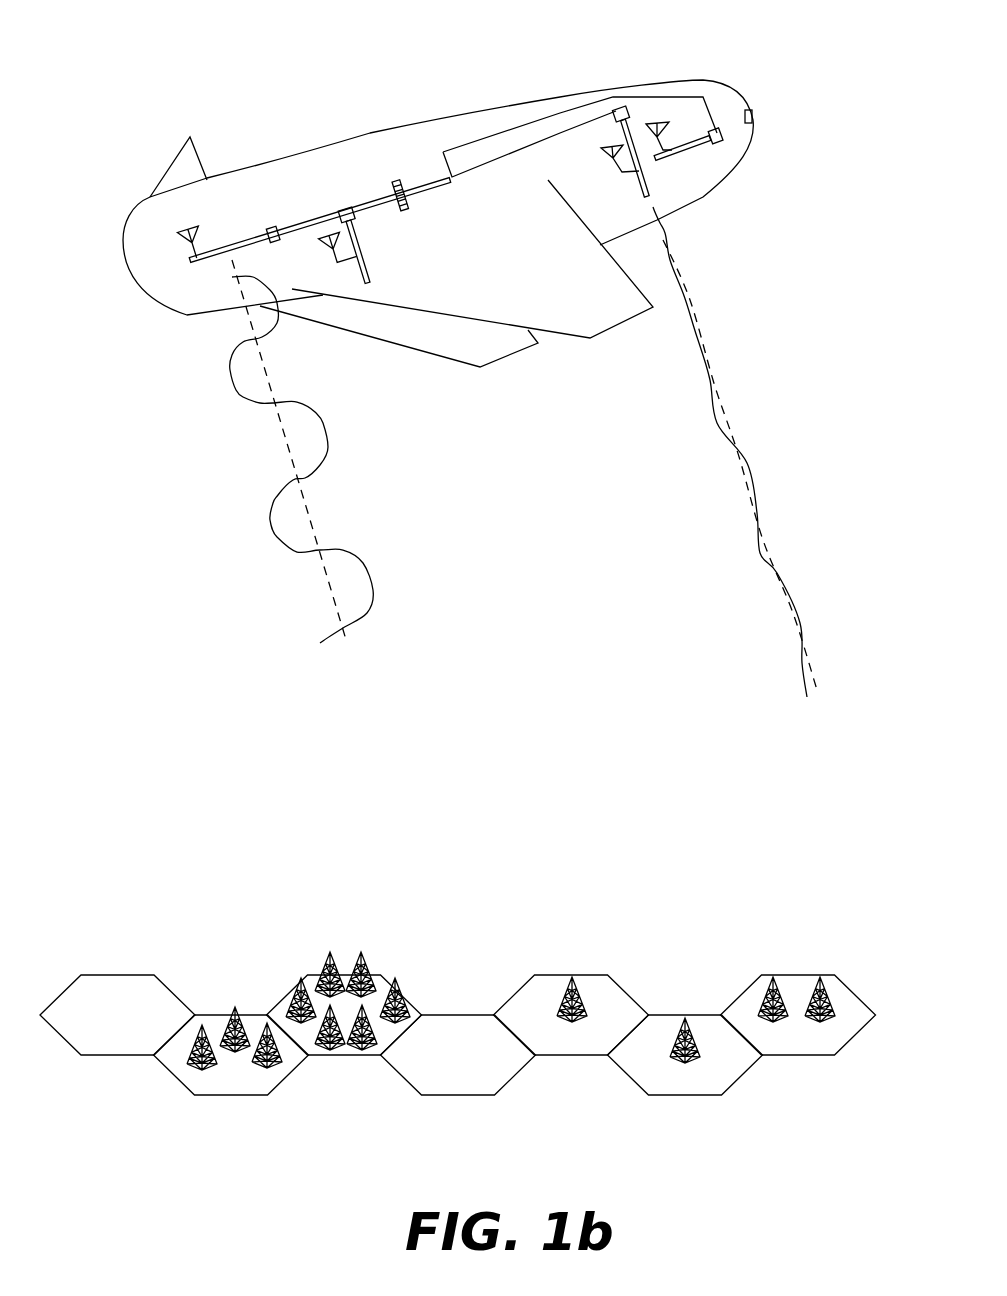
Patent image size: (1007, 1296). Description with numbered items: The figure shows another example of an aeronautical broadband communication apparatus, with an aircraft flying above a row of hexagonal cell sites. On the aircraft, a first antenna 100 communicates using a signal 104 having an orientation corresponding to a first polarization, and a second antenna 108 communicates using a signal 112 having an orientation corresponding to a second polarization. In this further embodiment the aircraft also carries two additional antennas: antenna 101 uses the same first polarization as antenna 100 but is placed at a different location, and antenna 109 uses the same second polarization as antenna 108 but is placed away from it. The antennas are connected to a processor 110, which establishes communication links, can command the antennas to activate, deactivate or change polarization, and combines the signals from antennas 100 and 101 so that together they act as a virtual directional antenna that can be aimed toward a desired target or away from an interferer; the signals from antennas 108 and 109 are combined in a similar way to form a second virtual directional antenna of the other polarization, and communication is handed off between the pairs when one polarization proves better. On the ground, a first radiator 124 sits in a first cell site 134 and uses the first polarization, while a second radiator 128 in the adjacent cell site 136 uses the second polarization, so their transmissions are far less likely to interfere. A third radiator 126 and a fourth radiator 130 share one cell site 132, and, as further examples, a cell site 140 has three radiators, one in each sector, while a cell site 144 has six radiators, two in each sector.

The first antenna 100 is at (252, 220).
The antenna 101 is at (710, 143).
The signal 104 is at (330, 447).
The second antenna 108 is at (642, 130).
The antenna 109 is at (368, 268).
The processor 110 is at (397, 187).
The signal 112 is at (747, 468).
The first radiator 124 is at (580, 987).
The third radiator 126 is at (782, 983).
The second radiator 128 is at (692, 1037).
The fourth radiator 130 is at (833, 983).
The cell site 132 is at (850, 987).
The first cell site 134 is at (635, 1000).
The cell site 136 is at (740, 1077).
The cell site 140 is at (220, 1010).
The cell site 144 is at (403, 980).